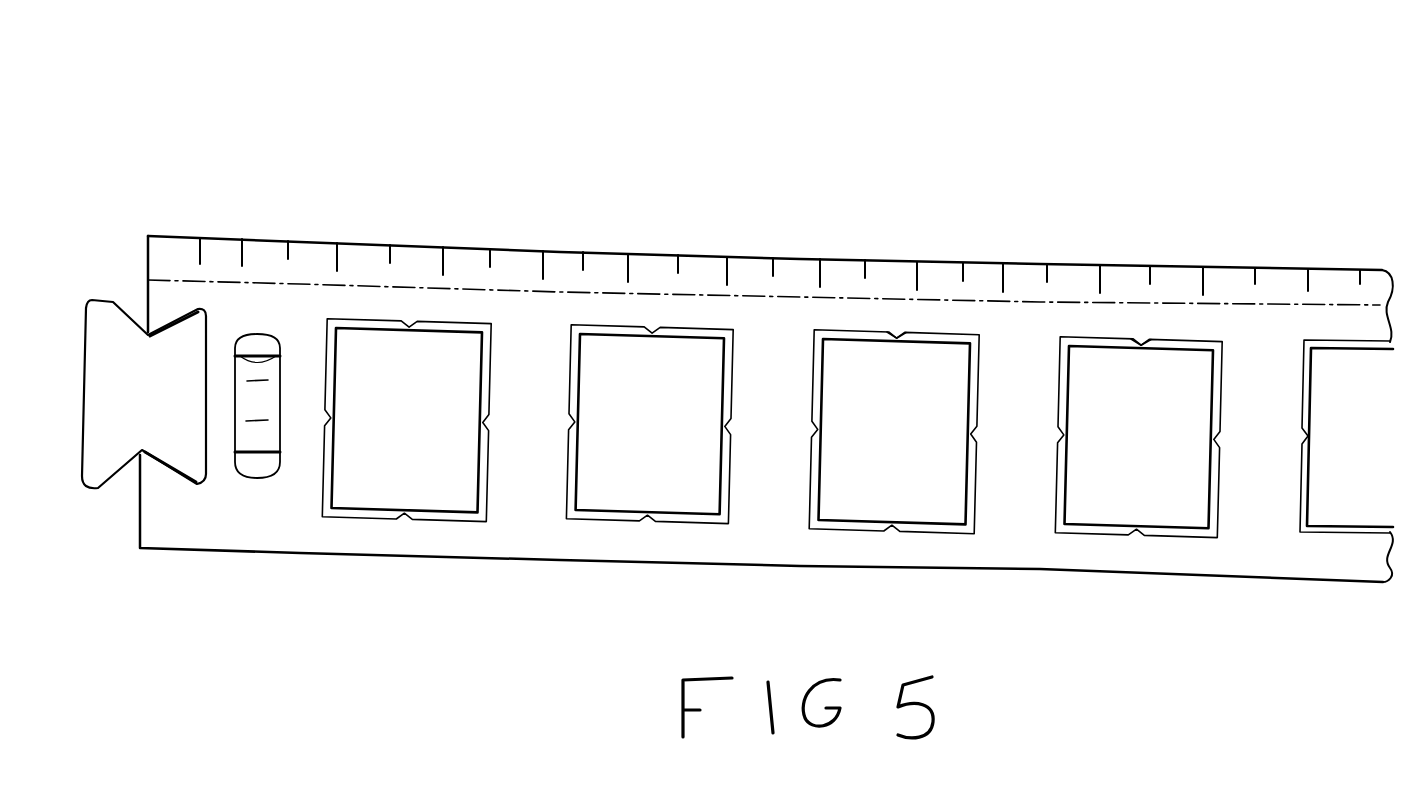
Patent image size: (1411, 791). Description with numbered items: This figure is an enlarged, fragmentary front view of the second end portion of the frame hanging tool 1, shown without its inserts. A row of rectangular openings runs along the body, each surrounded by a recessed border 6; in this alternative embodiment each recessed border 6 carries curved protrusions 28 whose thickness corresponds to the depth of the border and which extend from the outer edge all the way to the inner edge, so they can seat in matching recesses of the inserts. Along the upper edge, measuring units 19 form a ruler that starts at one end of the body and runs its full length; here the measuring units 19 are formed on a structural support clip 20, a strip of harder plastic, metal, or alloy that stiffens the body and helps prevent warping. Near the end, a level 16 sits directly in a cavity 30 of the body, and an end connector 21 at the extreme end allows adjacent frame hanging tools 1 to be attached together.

The frame hanging tool 1 is at (1346, 34).
The measuring units 19 is at (493, 255).
The structural support clip 20 is at (1118, 303).
The recessed border 6 is at (693, 333).
The protrusions 28 is at (897, 338).
The level 16 is at (258, 435).
The cavity 30 is at (260, 340).
The end connector 21 is at (128, 437).